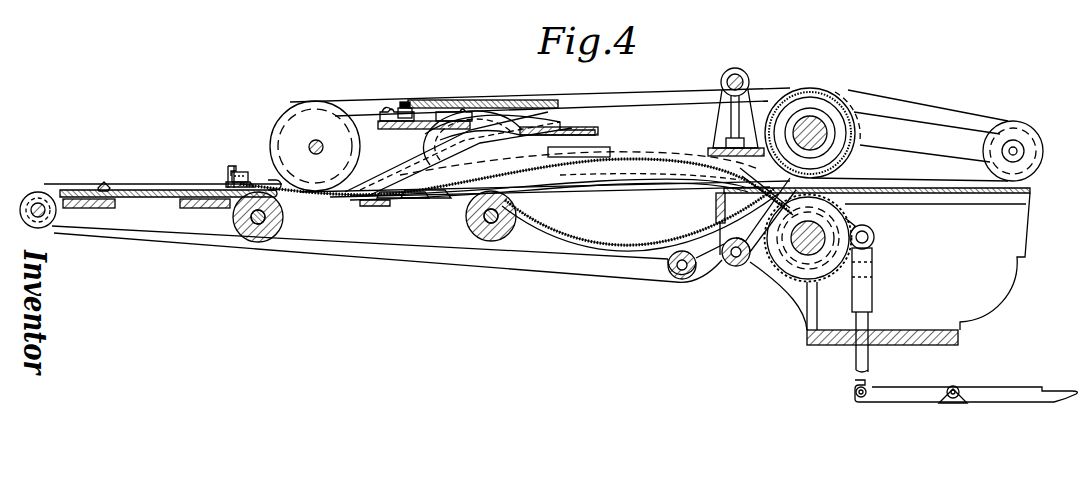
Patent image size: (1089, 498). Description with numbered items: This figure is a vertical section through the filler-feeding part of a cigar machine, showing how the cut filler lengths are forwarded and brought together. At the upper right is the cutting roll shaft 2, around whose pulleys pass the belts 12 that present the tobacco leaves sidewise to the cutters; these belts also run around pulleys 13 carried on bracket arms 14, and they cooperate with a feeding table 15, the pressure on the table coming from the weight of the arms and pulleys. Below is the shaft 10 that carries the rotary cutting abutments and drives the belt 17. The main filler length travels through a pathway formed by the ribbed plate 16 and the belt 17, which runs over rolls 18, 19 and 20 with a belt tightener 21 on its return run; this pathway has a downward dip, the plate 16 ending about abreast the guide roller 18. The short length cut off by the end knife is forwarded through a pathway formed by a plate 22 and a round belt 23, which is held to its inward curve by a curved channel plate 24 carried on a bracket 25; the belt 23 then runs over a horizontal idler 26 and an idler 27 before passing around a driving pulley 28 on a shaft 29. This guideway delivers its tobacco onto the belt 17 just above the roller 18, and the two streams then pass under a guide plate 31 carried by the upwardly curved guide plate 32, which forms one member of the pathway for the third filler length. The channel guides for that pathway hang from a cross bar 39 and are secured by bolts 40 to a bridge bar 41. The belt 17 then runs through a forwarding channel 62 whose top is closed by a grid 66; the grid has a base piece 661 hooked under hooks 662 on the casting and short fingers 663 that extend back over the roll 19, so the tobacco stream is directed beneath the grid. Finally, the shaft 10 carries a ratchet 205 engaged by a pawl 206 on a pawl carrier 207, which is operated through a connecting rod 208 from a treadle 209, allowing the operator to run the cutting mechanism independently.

The shaft 2 is at (815, 126).
The shaft 10 is at (808, 238).
The belts 12 is at (946, 114).
The pulleys 13 is at (1020, 150).
The bracket arms 14 is at (925, 155).
The feeding table 15 is at (977, 193).
The ribbed plate 16 is at (634, 235).
The belt 17 is at (457, 196).
The roll 18 is at (512, 229).
The roll 19 is at (284, 219).
The roll 20 is at (29, 202).
The belt tightener 21 is at (717, 268).
The plate 22 is at (632, 186).
The round belt 23 is at (590, 101).
The curved channel plate 24 is at (668, 160).
The bracket 25 is at (597, 148).
The horizontal idler 26 is at (420, 198).
The idler 27 is at (498, 128).
The driving pulley 28 is at (315, 146).
The shaft 29 is at (323, 149).
The guide plate 31 is at (436, 200).
The upwardly curved guide plate 32 is at (644, 157).
The cross bar 39 is at (742, 77).
The bolts 40 is at (406, 102).
The bridge bar 41 is at (384, 118).
The forwarding channel 62 is at (160, 190).
The grid 66 is at (101, 187).
The ratchet 205 is at (792, 276).
The pawl 206 is at (852, 226).
The pawl carrier 207 is at (874, 239).
The connecting rod 208 is at (872, 292).
The treadle 209 is at (910, 392).
The base piece 661 is at (228, 179).
The hooks 662 is at (234, 170).
The fingers or extensions 663 is at (258, 180).